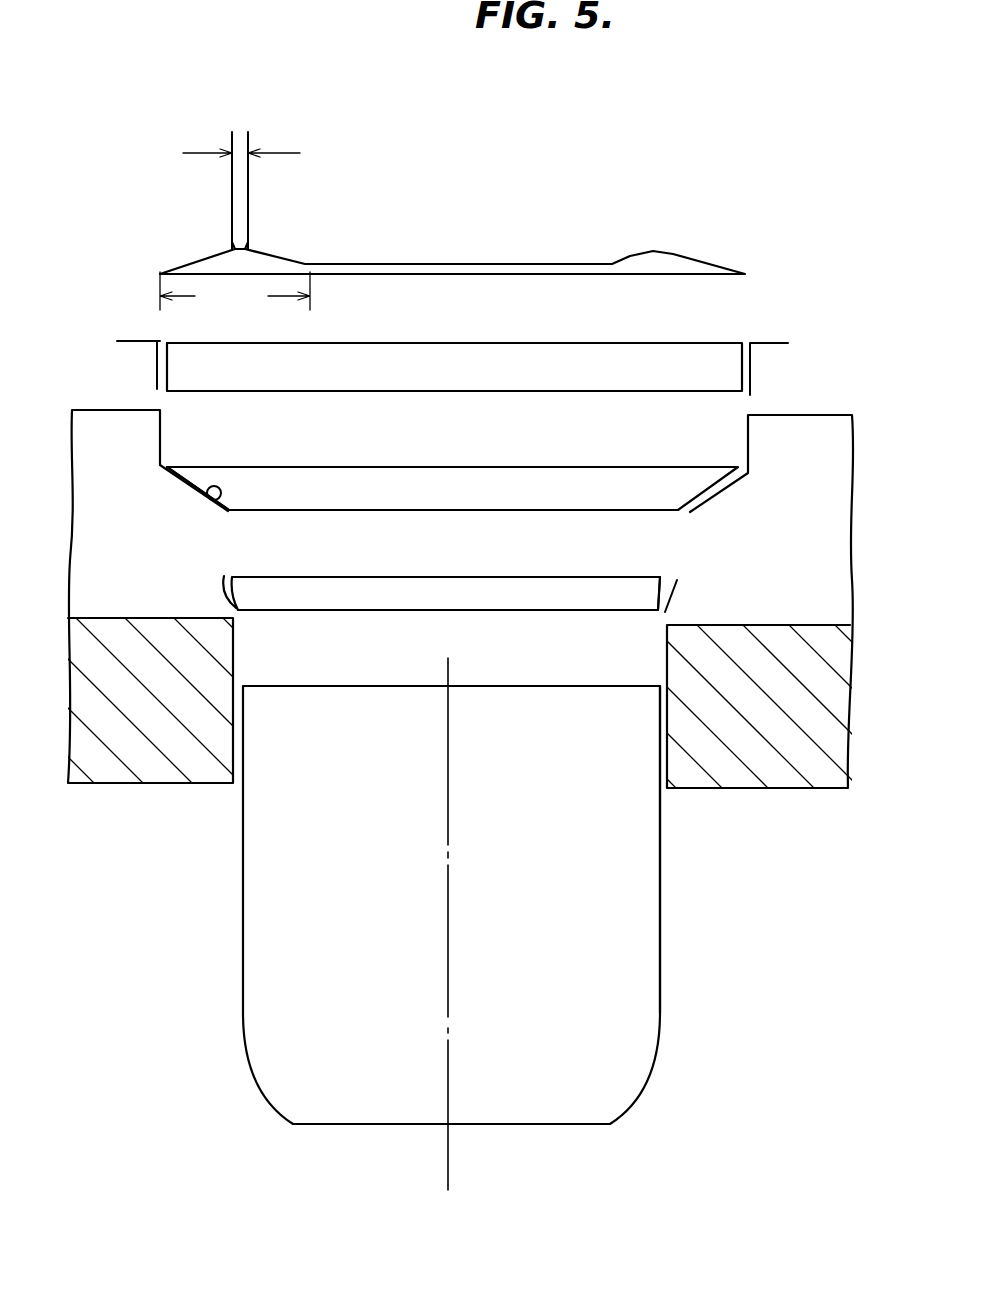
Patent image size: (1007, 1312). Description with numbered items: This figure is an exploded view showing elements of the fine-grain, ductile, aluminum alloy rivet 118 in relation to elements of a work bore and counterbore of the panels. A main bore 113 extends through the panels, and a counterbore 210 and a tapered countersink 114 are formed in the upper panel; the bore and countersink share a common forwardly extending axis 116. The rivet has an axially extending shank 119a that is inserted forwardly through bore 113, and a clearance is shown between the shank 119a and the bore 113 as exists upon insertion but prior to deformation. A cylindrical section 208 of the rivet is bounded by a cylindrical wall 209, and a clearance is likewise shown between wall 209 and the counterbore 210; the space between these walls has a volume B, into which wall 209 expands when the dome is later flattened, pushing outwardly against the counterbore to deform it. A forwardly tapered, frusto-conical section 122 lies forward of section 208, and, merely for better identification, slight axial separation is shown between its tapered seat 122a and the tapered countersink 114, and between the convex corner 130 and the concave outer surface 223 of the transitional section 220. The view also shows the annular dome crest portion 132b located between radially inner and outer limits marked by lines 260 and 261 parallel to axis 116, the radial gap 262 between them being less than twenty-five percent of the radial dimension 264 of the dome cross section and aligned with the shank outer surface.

The volume of the space between walls B is at (647, 254).
The radial gap 262 is at (240, 147).
The radial limit line 261 is at (232, 178).
The radial limit line 260 is at (248, 178).
The dome crest portion 132b is at (242, 243).
The radial dimension of the dome cross section 264 is at (235, 291).
The cylindrical section 208 is at (454, 367).
The cylindrical wall 209 is at (157, 368).
The counterbore 210 is at (167, 352).
The main bore 113 is at (667, 760).
The frusto-conical section 122 is at (452, 488).
The tapered seat 122a is at (190, 485).
The tapered countersink 114 is at (220, 500).
The transitional section 220 is at (441, 593).
The convex corner 130 is at (672, 593).
The concave outer surface 223 is at (658, 600).
The rivet 118 is at (228, 960).
The shank 119a is at (660, 920).
The axis 116 is at (450, 960).